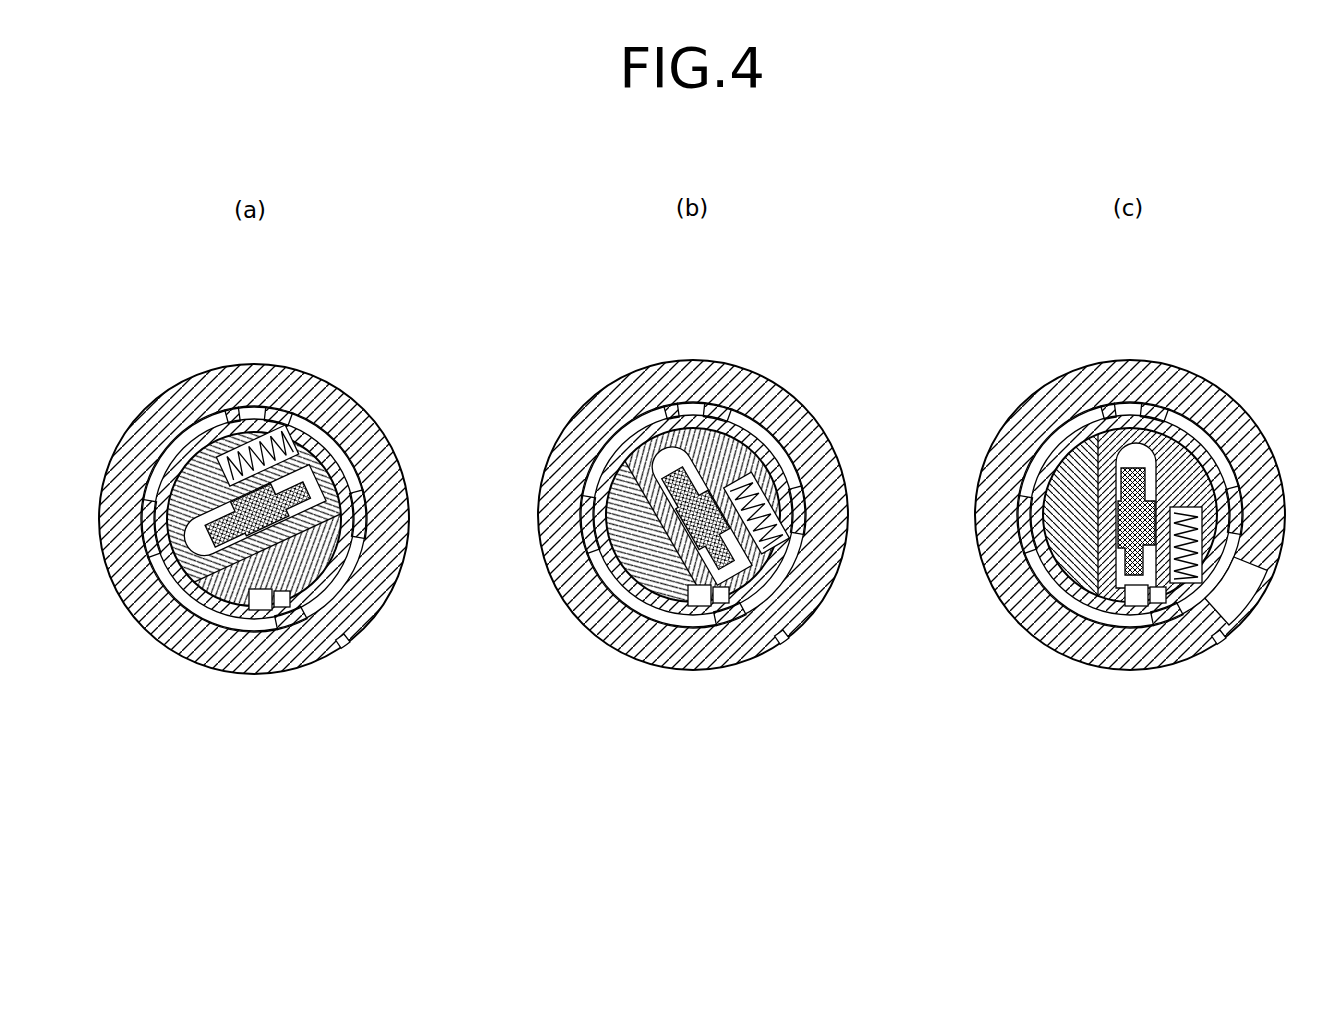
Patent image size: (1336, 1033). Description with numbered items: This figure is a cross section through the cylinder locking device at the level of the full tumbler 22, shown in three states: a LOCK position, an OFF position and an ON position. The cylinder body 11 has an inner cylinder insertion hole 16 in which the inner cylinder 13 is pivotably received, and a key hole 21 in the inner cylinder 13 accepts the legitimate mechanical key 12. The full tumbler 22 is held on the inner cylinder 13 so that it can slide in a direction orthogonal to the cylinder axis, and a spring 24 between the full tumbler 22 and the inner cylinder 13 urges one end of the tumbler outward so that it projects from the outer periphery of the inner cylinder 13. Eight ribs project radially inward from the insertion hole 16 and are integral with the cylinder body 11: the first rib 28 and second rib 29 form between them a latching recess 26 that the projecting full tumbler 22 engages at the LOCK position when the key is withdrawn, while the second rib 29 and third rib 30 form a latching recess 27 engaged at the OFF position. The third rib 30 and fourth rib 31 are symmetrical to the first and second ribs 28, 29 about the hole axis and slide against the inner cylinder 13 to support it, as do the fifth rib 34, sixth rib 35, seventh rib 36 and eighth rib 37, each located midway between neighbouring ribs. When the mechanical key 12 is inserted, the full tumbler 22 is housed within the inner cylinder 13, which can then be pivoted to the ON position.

The cylinder body 11 is at (218, 380).
The mechanical key 12 is at (1135, 515).
The inner cylinder 13 is at (328, 500).
The inner cylinder insertion hole 16 is at (362, 560).
The key hole 21 is at (246, 600).
The full tumbler 22 is at (180, 565).
The spring 24 is at (252, 440).
The latching recess 26 is at (168, 530).
The latching recess 27 is at (150, 448).
The first rib 28 is at (285, 600).
The second rib 29 is at (148, 490).
The third rib 30 is at (262, 432).
The fourth rib 31 is at (330, 495).
The fifth rib 34 is at (195, 605).
The sixth rib 35 is at (185, 425).
The seventh rib 36 is at (335, 455).
The eighth rib 37 is at (308, 590).